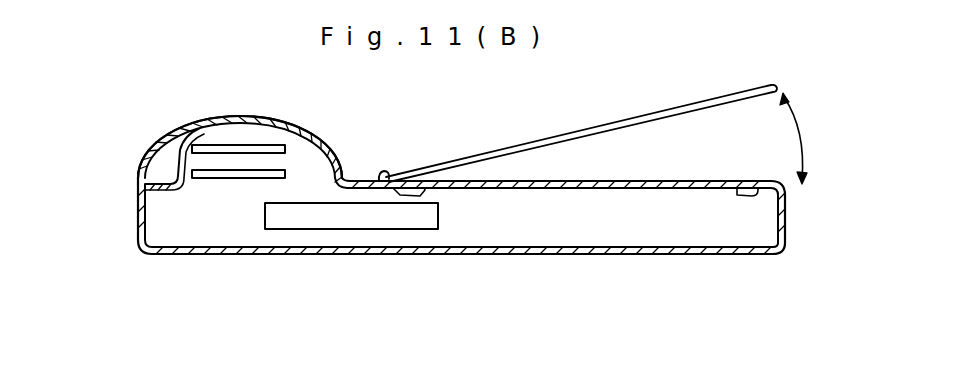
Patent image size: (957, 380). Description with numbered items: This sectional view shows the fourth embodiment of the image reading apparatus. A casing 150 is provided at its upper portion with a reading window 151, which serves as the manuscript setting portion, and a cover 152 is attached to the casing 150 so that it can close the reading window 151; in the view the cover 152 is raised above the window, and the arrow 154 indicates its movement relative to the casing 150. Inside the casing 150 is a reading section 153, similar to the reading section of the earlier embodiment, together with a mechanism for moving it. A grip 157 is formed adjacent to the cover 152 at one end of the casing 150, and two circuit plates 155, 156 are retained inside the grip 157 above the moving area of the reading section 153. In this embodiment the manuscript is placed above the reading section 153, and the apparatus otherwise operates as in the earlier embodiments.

The casing 150 is at (787, 232).
The reading window 151 is at (677, 182).
The cover 152 is at (647, 108).
The reading section 153 is at (374, 218).
The lid pivoting direction 154 is at (811, 122).
The circuit plate 155 is at (220, 178).
The circuit plate 156 is at (207, 145).
The grip 157 is at (230, 118).